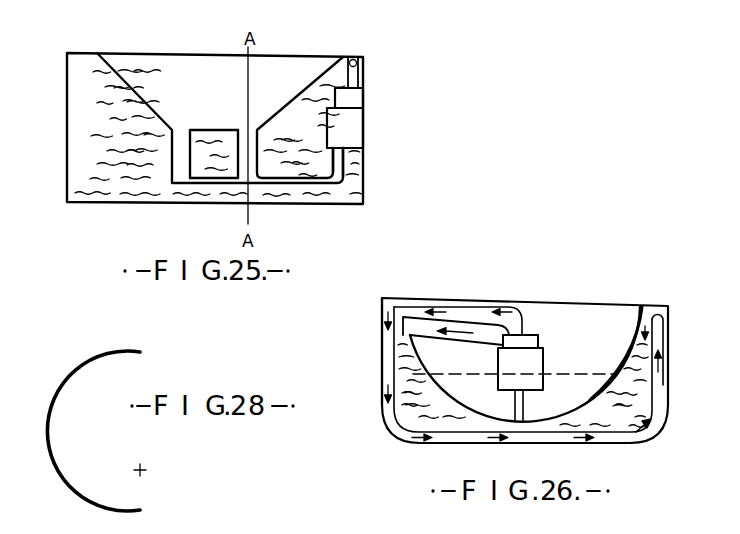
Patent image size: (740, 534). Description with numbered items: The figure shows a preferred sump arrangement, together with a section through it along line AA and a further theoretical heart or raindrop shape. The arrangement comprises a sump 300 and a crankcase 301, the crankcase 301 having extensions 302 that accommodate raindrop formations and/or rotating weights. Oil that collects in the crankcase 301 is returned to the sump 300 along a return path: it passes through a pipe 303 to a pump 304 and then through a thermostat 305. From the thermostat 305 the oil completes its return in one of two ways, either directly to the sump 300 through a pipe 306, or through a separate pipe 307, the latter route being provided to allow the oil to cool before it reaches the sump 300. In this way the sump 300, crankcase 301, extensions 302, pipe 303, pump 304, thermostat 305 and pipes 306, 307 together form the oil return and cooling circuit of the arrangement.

In FIG. 25, the sump 300 is at (350, 194).
In FIG. 26, the sump 300 is at (621, 398).
In FIG. 25, the crankcase 301 is at (306, 88).
In FIG. 26, the crankcase 301 is at (622, 395).
In FIG. 25, the extensions 302 is at (180, 165).
In FIG. 26, the extensions 302 is at (485, 400).
In FIG. 25, the pipe 303 is at (322, 190).
In FIG. 26, the pipe 303 is at (517, 413).
In FIG. 25, the pump 304 is at (351, 137).
In FIG. 26, the pump 304 is at (543, 358).
In FIG. 25, the thermostat 305 is at (358, 98).
In FIG. 26, the thermostat 305 is at (530, 335).
In FIG. 26, the pipe 306 is at (483, 338).
In FIG. 25, the pipe 307 is at (359, 81).
In FIG. 26, the pipe 307 is at (386, 388).